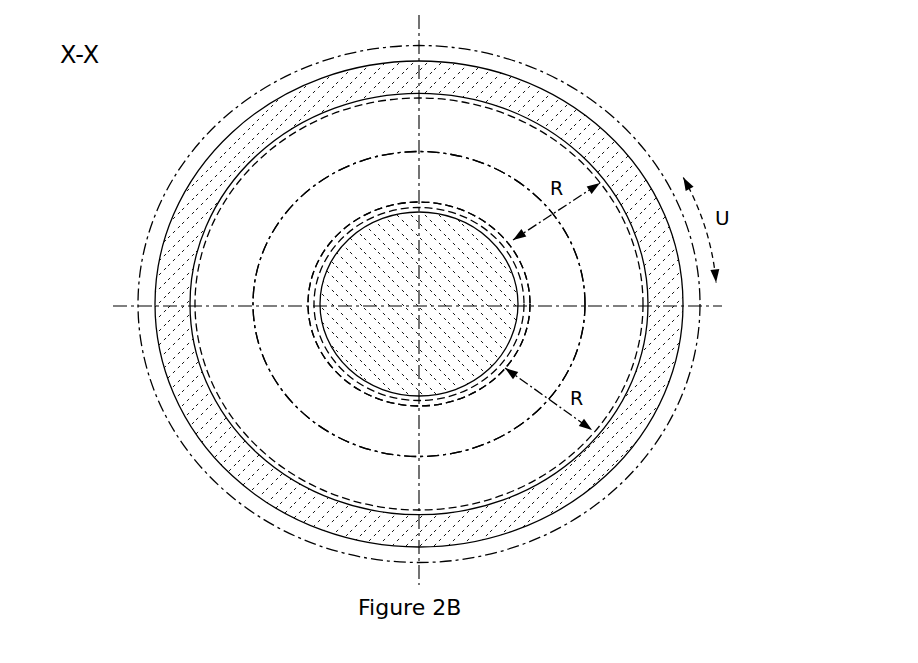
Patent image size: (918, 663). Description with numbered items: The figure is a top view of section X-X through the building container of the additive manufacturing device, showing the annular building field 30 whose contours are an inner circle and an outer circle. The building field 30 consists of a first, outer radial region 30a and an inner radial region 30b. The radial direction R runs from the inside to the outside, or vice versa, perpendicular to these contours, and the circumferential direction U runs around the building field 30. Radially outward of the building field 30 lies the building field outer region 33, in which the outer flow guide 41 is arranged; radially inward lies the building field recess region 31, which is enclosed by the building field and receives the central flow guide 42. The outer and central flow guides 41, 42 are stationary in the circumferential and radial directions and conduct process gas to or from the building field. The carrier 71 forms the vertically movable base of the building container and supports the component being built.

The building field 30 is at (419, 304).
The first (outer) radial region 30a is at (507, 140).
The inner radial region 30b is at (507, 196).
The building field recess region 31 is at (317, 297).
The building field outer region 33 is at (657, 175).
The outer flow guide 41 is at (598, 145).
The central flow guide 42 is at (363, 255).
The carrier 71 is at (222, 374).